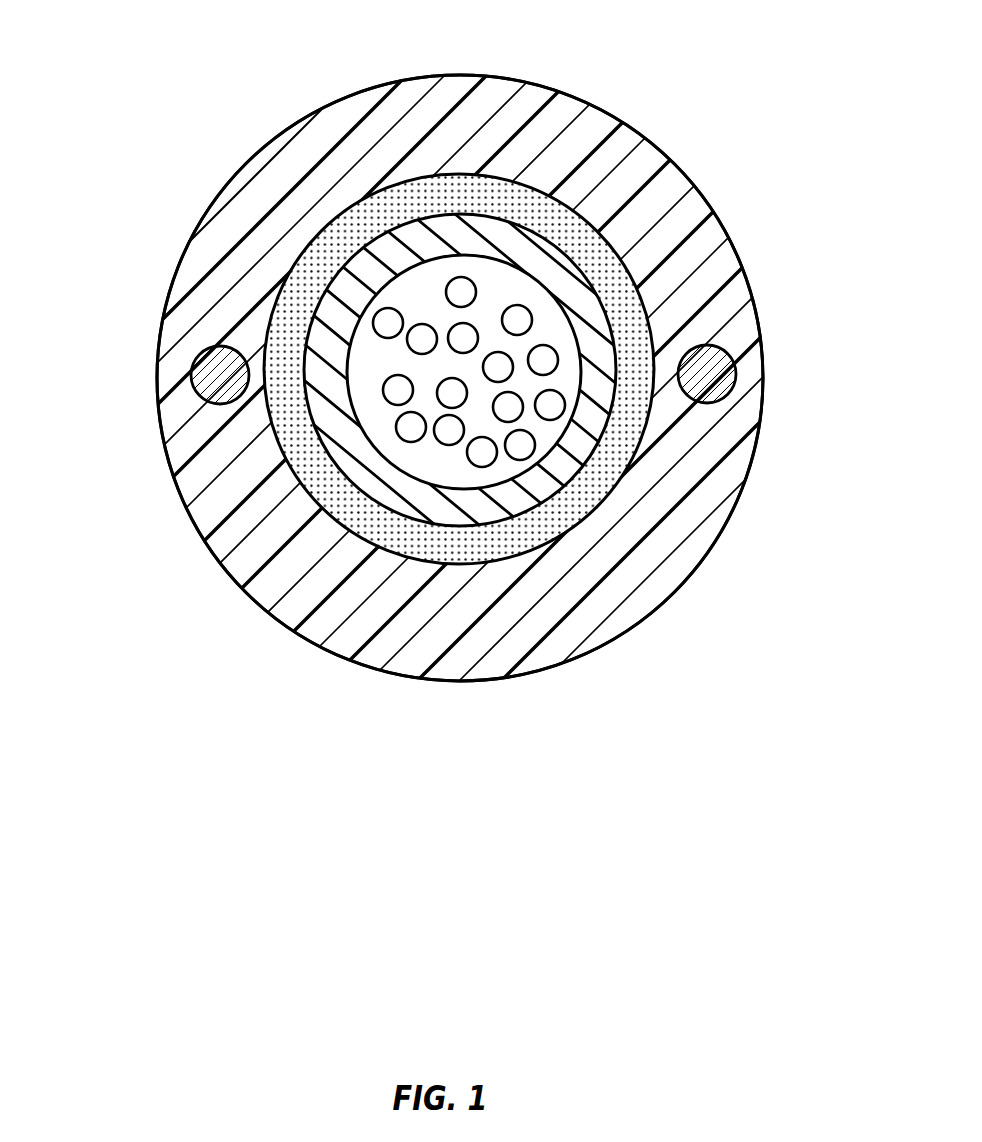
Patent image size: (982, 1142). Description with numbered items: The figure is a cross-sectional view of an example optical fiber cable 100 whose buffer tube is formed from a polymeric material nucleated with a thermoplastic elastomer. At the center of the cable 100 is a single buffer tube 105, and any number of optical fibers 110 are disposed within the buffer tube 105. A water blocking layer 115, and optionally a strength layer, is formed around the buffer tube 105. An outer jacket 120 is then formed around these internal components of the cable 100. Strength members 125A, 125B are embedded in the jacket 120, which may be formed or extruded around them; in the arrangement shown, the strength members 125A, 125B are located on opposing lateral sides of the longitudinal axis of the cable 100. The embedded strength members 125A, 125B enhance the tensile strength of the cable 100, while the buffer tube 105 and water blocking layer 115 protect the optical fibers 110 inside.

The optical fiber cable 100 is at (270, 693).
The buffer tube 105 is at (577, 480).
The optical fibers 110 is at (440, 457).
The water blocking layer 115 is at (582, 253).
The outer jacket 120 is at (480, 148).
The strength member 125A is at (213, 377).
The strength member 125B is at (710, 375).